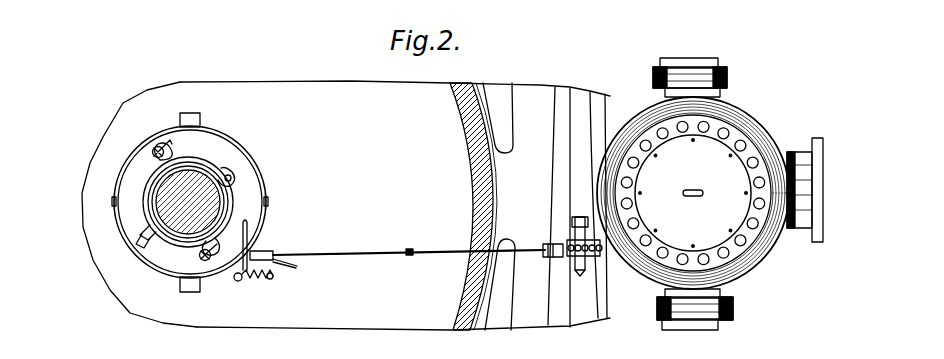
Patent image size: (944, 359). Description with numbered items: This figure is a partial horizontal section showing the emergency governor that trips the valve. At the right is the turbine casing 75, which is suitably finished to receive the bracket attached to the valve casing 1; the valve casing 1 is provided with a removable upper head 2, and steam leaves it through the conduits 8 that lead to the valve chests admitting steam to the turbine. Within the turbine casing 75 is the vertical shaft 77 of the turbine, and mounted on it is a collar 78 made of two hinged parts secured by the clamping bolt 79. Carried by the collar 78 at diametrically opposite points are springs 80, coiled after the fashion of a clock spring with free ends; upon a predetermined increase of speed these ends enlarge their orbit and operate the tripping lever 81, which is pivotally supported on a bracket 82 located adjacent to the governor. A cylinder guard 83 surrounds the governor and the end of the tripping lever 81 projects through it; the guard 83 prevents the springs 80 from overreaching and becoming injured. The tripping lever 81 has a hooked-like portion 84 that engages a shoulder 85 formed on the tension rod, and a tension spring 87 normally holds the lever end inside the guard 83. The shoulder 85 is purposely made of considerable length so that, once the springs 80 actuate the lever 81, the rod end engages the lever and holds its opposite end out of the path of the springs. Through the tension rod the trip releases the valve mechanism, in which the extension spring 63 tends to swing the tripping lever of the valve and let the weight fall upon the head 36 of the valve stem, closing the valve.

The valve casing 1 is at (759, 113).
The upper head 2 is at (693, 193).
The conduits 8 is at (713, 60).
The head 36 is at (410, 250).
The extension spring 63 is at (585, 215).
The turbine casing 75 is at (603, 107).
The vertical shaft 77 is at (225, 170).
The collar 78 is at (190, 158).
The clamping bolt 79 is at (153, 233).
The springs 80 is at (160, 150).
The tripping lever 81 is at (248, 228).
The bracket 82 is at (240, 280).
The cylinder guard 83 is at (260, 212).
The hooked-like portion 84 is at (281, 263).
The shoulder 85 is at (274, 246).
The tension spring 87 is at (272, 279).